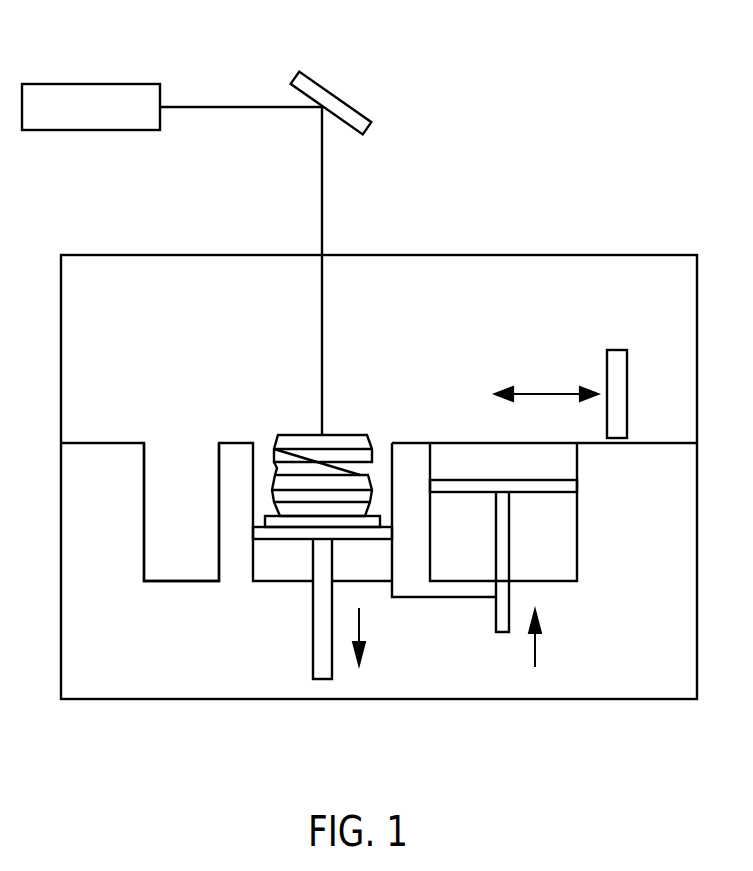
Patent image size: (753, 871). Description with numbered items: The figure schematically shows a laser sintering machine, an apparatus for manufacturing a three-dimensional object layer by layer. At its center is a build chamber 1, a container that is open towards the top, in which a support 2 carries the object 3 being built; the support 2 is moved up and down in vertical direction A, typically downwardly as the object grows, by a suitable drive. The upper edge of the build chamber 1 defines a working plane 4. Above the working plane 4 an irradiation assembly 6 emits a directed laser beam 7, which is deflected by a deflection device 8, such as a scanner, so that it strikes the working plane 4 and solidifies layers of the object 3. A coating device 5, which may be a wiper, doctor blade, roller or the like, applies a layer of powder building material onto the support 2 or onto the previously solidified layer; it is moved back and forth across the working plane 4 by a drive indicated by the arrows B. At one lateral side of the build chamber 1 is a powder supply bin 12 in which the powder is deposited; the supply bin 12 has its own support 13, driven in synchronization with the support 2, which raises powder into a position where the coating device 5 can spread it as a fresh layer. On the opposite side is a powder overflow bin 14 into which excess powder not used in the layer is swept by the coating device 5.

The build chamber 1 is at (393, 567).
The support 2 is at (358, 540).
The object 3 is at (293, 434).
The working plane 4 is at (383, 426).
The coating device 5 is at (617, 350).
The irradiation assembly 6 is at (90, 83).
The laser beam 7 is at (230, 106).
The deflection device 8 is at (337, 95).
The powder supply bin 12 is at (585, 483).
The support of the supply bin 13 is at (535, 493).
The powder overflow bin 14 is at (144, 503).
The vertical direction A is at (361, 637).
The arrows indicating drive movement B is at (547, 394).